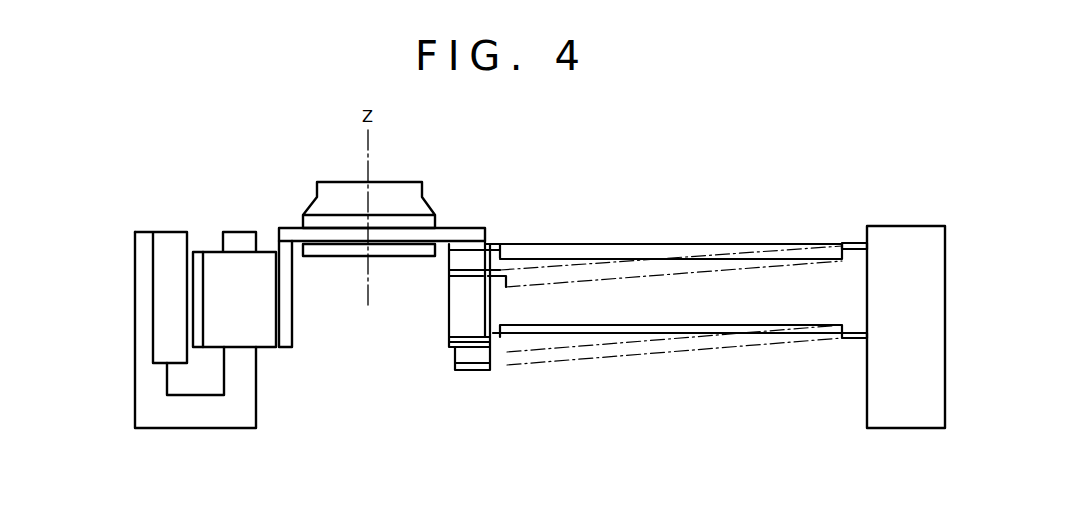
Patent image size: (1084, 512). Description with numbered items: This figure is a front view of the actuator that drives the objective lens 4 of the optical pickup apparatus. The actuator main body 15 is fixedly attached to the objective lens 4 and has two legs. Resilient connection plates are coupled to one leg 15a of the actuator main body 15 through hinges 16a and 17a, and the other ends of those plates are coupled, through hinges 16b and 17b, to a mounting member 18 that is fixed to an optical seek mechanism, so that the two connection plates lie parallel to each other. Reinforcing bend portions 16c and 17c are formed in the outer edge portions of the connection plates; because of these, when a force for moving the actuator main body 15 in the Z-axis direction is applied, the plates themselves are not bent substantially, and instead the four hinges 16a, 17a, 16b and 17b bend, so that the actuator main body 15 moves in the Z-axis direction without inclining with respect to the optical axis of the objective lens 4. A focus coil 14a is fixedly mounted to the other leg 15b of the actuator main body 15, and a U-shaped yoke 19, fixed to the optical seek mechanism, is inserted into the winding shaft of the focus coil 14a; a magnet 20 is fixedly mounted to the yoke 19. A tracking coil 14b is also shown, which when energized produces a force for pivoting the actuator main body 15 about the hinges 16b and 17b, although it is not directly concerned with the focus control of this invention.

The objective lens 4 is at (397, 187).
The focus coil 14a is at (267, 340).
The tracking coil 14b is at (197, 250).
The actuator main body 15 is at (443, 233).
The one leg of the actuator main body 15a is at (449, 288).
The other leg of the actuator main body 15b is at (293, 277).
The hinge 16a is at (497, 243).
The hinge 16b is at (857, 240).
The reinforcing bend portion 16c is at (638, 243).
The hinge 17a is at (490, 343).
The hinge 17b is at (852, 343).
The reinforcing bend portion 17c is at (630, 333).
The mounting member 18 is at (903, 226).
The U-shaped yoke 19 is at (187, 415).
The magnet 20 is at (165, 232).